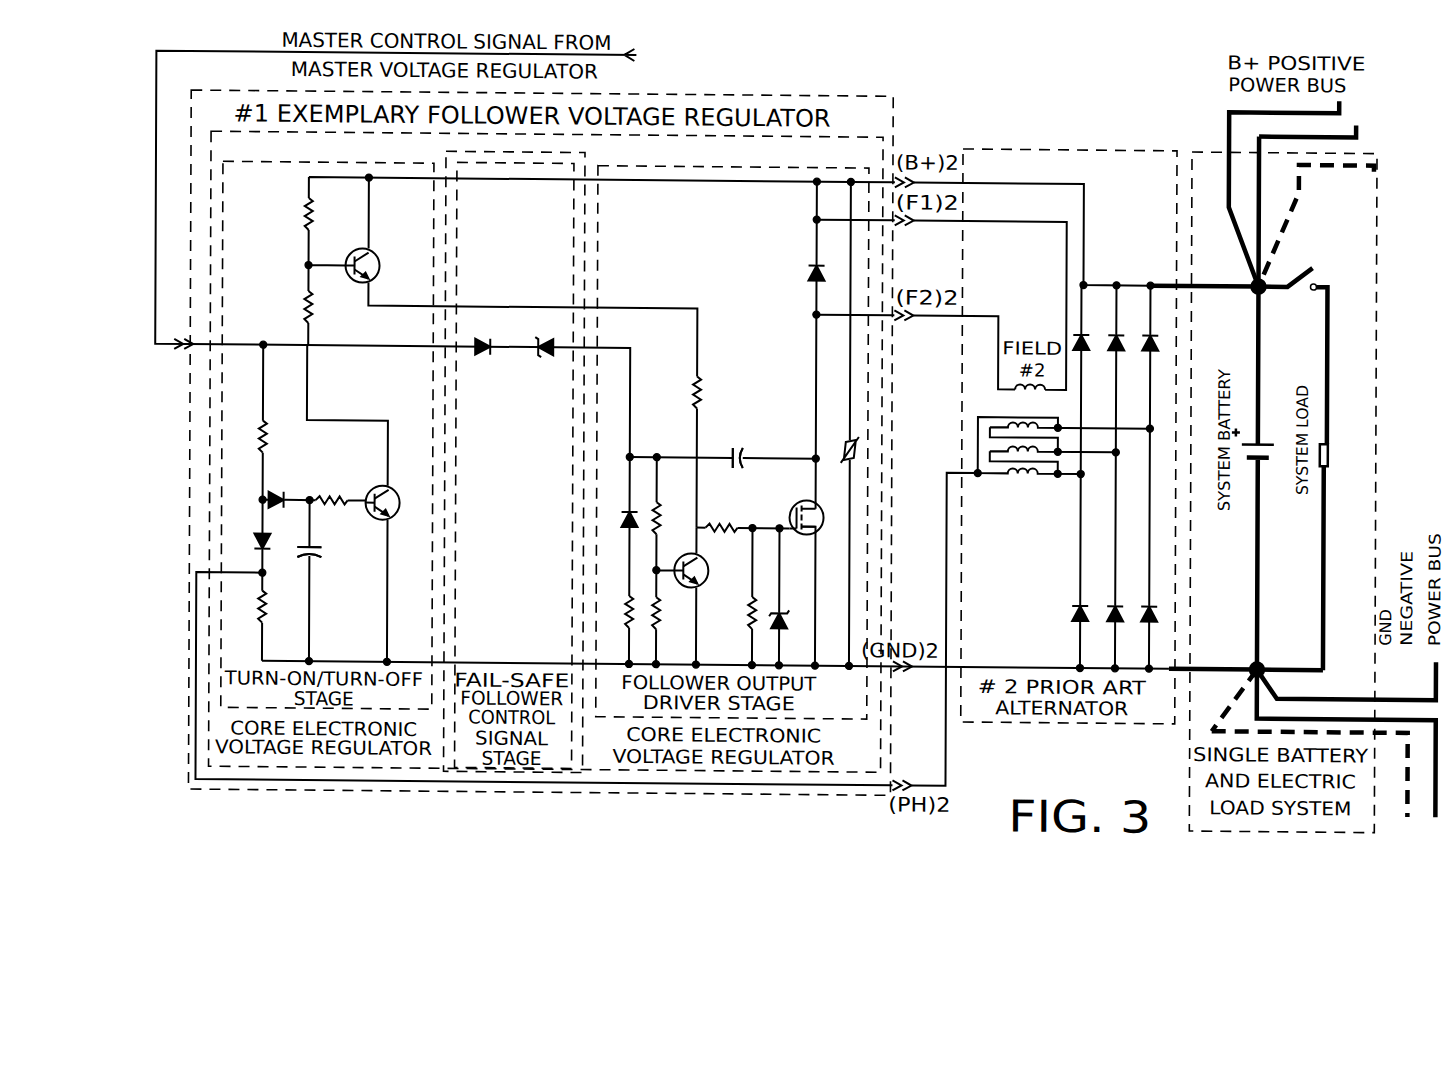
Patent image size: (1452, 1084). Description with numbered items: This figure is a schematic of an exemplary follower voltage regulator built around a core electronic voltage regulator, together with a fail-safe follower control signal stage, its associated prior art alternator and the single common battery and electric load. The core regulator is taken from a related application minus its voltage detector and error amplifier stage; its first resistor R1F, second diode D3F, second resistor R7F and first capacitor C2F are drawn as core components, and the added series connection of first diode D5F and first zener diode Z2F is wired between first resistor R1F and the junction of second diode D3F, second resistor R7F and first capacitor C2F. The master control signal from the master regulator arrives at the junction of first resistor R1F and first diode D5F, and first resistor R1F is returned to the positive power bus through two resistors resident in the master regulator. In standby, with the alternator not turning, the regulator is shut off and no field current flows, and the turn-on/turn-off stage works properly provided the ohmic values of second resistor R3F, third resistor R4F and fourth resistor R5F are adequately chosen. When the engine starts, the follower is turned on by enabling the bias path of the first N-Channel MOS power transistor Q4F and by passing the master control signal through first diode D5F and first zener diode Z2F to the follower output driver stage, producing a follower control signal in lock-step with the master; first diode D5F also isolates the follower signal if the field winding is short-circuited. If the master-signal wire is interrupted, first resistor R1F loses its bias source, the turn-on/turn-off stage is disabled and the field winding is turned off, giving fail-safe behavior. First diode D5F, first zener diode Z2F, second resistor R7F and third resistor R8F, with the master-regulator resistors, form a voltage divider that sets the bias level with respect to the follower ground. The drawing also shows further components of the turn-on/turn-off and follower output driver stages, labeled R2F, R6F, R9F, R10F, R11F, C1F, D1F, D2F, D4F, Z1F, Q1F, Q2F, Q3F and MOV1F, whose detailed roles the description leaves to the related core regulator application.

The first resistor R1F is at (250, 436).
The resistor R2F is at (249, 606).
The second resistor R3F is at (330, 488).
The third resistor R4F is at (296, 214).
The fourth resistor R5F is at (295, 307).
The resistor R6F is at (615, 612).
The second resistor R7F is at (667, 518).
The third resistor R8F is at (667, 613).
The resistor R9F is at (709, 392).
The resistor R10F is at (725, 516).
The resistor R11F is at (739, 613).
The capacitor C1F is at (324, 566).
The first capacitor C2F is at (739, 448).
The diode D1F is at (251, 542).
The diode D2F is at (284, 490).
The second diode D3F is at (617, 519).
The diode D4F is at (805, 273).
The first diode D5F is at (485, 360).
The zener diode Z1F is at (788, 620).
The first zener diode Z2F is at (543, 359).
The transistor Q1F is at (377, 257).
The transistor Q2F is at (397, 495).
The transistor Q3F is at (699, 570).
The first N-Channel MOS power transistor Q4F is at (793, 509).
The metal oxide varistor MOV1F is at (840, 450).